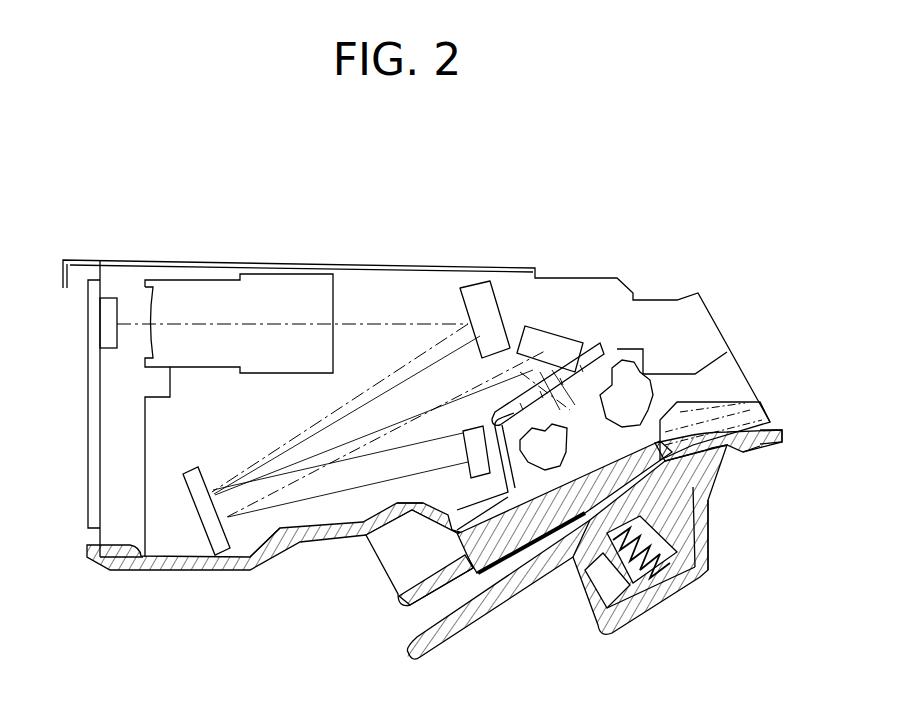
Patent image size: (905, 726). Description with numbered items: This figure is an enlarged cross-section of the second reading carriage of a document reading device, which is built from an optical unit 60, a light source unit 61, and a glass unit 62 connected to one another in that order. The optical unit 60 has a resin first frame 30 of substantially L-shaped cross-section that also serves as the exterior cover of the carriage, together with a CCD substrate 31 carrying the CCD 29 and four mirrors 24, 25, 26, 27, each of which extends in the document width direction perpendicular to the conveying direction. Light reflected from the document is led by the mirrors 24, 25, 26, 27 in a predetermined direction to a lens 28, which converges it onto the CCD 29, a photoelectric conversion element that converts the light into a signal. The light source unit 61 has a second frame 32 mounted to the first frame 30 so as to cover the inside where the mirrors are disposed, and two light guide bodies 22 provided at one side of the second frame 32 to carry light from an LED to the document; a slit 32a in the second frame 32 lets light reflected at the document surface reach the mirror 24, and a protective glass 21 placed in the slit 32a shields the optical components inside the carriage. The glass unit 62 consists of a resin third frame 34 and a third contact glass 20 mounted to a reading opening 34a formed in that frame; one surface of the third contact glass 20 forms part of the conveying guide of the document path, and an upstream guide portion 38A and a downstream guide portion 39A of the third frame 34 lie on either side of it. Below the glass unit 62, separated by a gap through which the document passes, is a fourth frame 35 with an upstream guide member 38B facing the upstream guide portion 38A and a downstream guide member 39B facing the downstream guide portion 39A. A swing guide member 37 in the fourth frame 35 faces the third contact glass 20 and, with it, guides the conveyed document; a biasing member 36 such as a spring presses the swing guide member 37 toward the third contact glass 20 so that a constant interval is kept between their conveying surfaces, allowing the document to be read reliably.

The optical unit 60 is at (390, 252).
The first frame 30 is at (612, 278).
The CCD substrate 31 is at (90, 387).
The CCD 29 is at (108, 322).
The lens 28 is at (275, 290).
The mirror 27 is at (472, 290).
The mirror 24 is at (566, 336).
The mirror 26 is at (462, 422).
The mirror 25 is at (190, 476).
The protective glass 21 is at (585, 400).
The light guide body 22 is at (630, 395).
The third frame 34 is at (742, 402).
The reading opening 34a is at (490, 500).
The second frame 32 is at (380, 576).
The slit 32a is at (548, 510).
The upstream guide portion 38A is at (427, 607).
The upstream guide member 38B is at (470, 617).
The biasing member 36 is at (660, 582).
The swing guide member 37 is at (663, 527).
The fourth frame 35 is at (707, 577).
The third contact glass 20 is at (706, 500).
The downstream guide portion 39A is at (747, 432).
The downstream guide member 39B is at (763, 447).
The light source unit 61 is at (302, 563).
The glass unit 62 is at (385, 611).